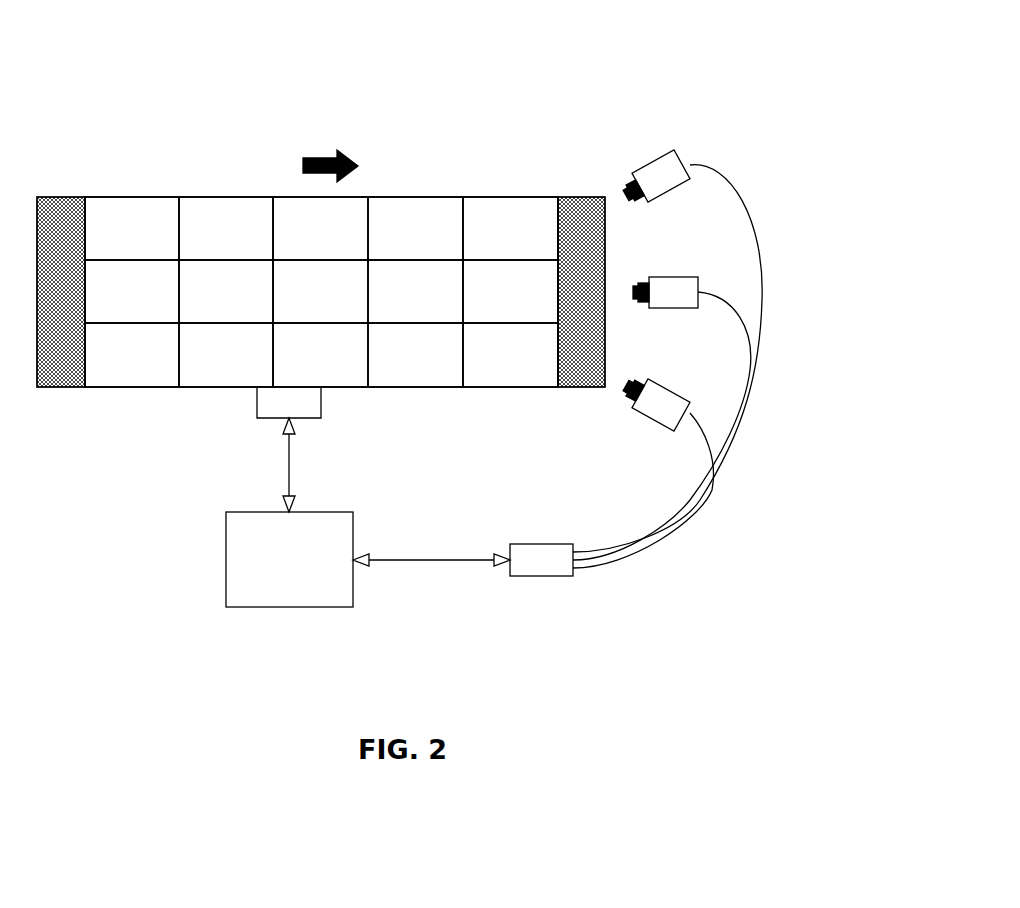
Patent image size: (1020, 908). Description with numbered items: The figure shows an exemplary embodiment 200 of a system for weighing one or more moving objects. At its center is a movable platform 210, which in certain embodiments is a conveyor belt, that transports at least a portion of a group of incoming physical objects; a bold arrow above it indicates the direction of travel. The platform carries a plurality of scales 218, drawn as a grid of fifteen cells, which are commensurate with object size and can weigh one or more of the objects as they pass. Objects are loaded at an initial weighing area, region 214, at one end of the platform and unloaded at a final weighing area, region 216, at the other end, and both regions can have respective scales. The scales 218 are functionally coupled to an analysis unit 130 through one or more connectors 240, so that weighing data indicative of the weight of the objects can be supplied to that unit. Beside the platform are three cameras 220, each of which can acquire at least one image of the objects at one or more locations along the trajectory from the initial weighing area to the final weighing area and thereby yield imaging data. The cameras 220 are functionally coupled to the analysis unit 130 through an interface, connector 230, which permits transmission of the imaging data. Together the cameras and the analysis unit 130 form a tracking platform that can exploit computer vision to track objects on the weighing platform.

The exemplary embodiment 200 is at (715, 70).
The platform 210 is at (114, 165).
The region 214 is at (74, 270).
The region 216 is at (597, 271).
The scales 218 is at (321, 292).
The cameras 220 is at (667, 342).
The connector 230 is at (543, 544).
The connector 240 is at (257, 418).
The analysis unit 130 is at (322, 512).